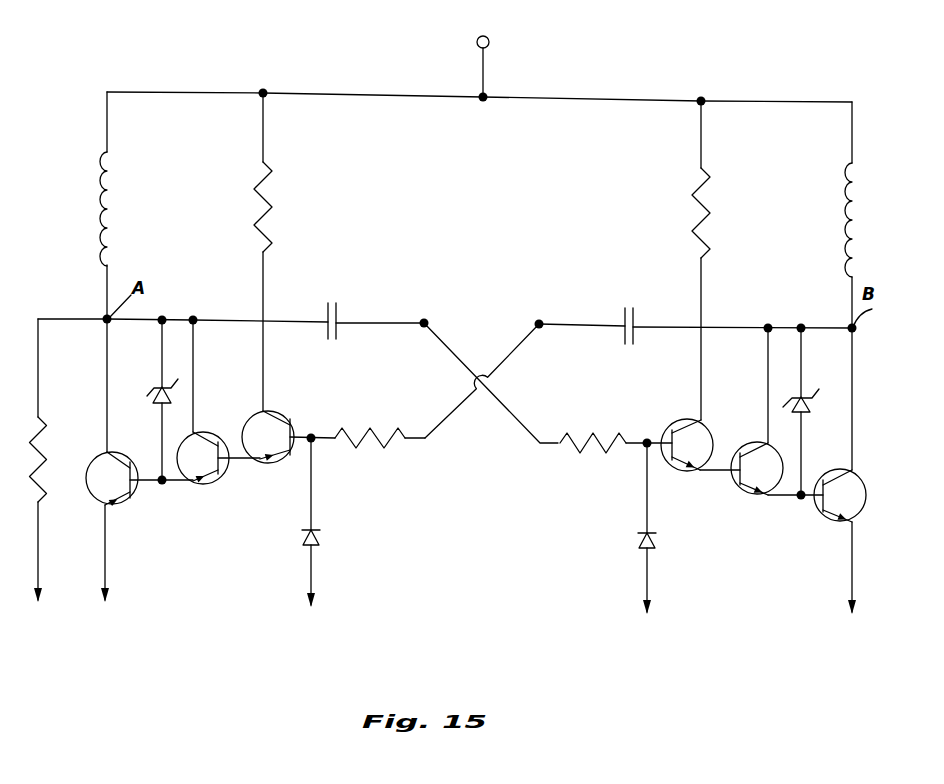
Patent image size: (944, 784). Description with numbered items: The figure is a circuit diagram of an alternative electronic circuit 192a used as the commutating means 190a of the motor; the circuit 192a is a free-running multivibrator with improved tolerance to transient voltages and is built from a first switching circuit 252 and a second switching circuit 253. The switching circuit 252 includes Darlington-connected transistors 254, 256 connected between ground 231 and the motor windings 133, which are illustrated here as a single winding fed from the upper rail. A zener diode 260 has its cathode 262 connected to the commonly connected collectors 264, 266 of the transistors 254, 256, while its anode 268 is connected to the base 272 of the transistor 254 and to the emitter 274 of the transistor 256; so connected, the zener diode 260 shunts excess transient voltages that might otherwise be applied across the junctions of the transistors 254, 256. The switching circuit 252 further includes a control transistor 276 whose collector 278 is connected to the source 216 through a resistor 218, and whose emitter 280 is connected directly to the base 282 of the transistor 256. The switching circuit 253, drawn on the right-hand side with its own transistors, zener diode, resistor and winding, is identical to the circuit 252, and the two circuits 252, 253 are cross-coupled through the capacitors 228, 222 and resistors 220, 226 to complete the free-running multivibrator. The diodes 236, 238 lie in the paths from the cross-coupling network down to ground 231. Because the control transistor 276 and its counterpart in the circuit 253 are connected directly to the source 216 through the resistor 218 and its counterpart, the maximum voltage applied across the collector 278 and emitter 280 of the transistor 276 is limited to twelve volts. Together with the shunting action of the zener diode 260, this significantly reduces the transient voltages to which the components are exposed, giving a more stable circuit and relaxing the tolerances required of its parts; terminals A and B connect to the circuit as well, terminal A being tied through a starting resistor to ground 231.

The motor windings 133 is at (103, 195).
The resistor 218 is at (268, 207).
The source 216 is at (480, 48).
The alternative electronic circuit 192a is at (506, 240).
The capacitor 228 is at (340, 315).
The capacitor 222 is at (630, 318).
The resistor 220 is at (356, 431).
The resistor 226 is at (601, 437).
The zener diode 260 is at (146, 401).
The cathode 262 is at (157, 387).
The anode 268 is at (182, 403).
The transistor 254 is at (119, 506).
The collector 264 is at (105, 453).
The base 272 is at (145, 486).
The transistor 256 is at (214, 486).
The collector 266 is at (194, 432).
The emitter 274 is at (191, 489).
The base 282 is at (234, 461).
The control transistor 276 is at (289, 413).
The collector 278 is at (263, 410).
The emitter 280 is at (258, 462).
The diode 236 is at (320, 541).
The diode 238 is at (643, 546).
The second switching circuit 253 is at (713, 544).
The ground 231 is at (98, 594).
The first switching circuit 252 is at (181, 585).
The commutating means 190a is at (688, 668).